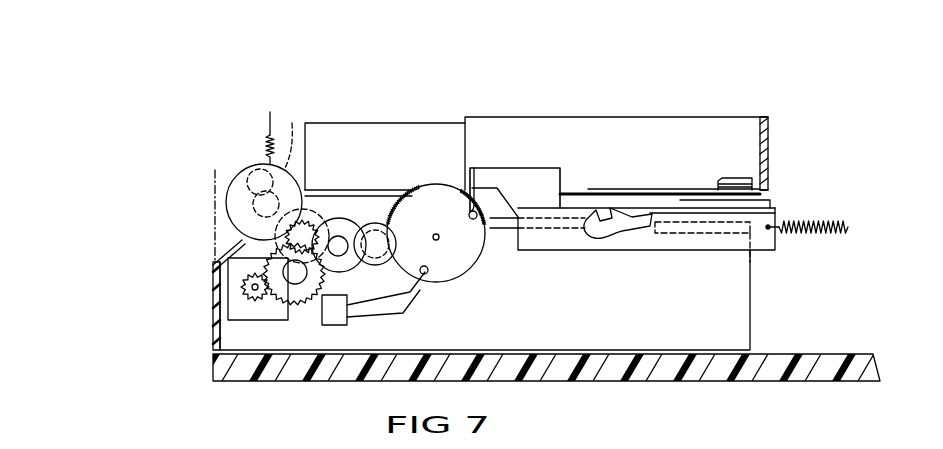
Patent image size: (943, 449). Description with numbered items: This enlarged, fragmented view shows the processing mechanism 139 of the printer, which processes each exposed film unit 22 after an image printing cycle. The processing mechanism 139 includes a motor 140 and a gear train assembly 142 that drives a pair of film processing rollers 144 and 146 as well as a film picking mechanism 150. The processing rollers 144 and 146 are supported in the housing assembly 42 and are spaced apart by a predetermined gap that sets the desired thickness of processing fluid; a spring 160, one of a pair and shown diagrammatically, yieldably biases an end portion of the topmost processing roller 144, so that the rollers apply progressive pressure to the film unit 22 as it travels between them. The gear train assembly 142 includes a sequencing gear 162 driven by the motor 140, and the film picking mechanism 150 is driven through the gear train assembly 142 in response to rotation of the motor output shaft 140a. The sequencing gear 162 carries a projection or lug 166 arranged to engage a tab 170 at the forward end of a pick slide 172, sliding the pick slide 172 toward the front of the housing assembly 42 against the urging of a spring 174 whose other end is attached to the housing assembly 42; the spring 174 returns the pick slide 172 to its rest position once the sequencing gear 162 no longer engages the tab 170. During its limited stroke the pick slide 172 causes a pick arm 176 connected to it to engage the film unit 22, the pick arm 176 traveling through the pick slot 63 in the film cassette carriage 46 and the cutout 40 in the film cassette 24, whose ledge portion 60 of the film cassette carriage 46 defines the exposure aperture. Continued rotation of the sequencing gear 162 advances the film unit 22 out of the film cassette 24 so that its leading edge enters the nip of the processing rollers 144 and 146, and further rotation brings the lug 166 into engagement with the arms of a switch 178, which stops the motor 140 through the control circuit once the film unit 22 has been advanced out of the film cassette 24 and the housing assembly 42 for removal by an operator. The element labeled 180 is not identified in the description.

The processing mechanism 139 is at (374, 92).
The spring 160 is at (270, 112).
The processing roller 144 is at (299, 134).
The processing roller 146 is at (261, 189).
The gear train assembly 142 is at (360, 172).
The film cassette 24 is at (437, 123).
The ledge portion 60 is at (386, 192).
The film cassette carriage 46 is at (625, 128).
The pick slide 172 is at (497, 177).
The tab 170 is at (470, 211).
The lug 166 is at (456, 242).
The sequencing gear 162 is at (452, 281).
The guide rods 180 is at (495, 232).
The film picking mechanism 150 is at (604, 256).
The pick arm 176 is at (650, 210).
The film unit 22 is at (728, 173).
The cutout 40 is at (766, 185).
The pick slot 63 is at (766, 196).
The spring 174 is at (822, 225).
The switch 178 is at (338, 322).
The motor 140 is at (237, 312).
The motor output shaft 140a is at (243, 286).
The housing assembly 42 is at (670, 380).